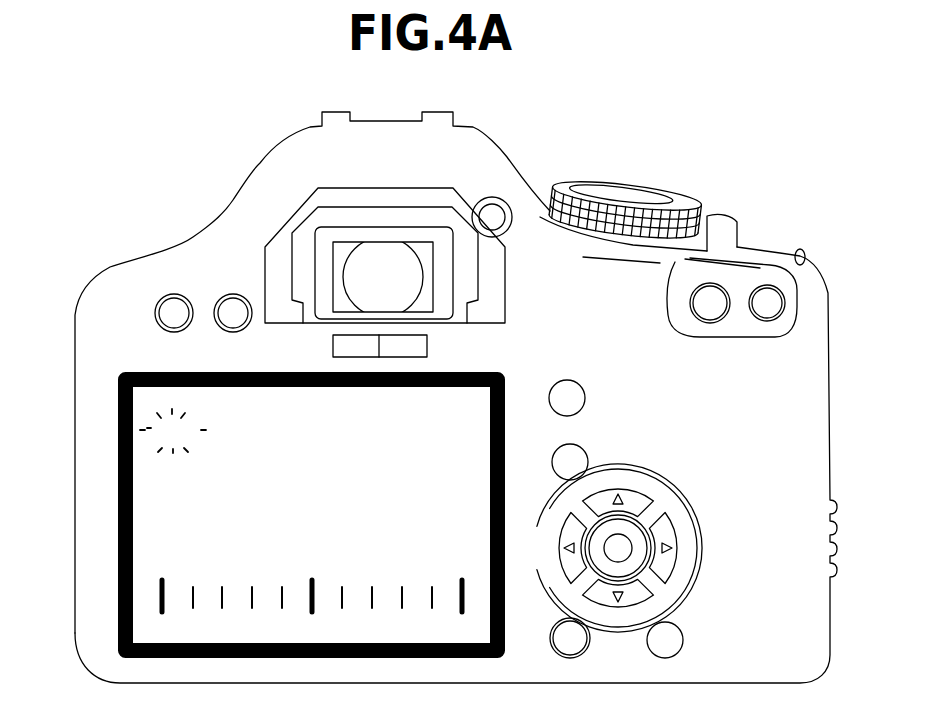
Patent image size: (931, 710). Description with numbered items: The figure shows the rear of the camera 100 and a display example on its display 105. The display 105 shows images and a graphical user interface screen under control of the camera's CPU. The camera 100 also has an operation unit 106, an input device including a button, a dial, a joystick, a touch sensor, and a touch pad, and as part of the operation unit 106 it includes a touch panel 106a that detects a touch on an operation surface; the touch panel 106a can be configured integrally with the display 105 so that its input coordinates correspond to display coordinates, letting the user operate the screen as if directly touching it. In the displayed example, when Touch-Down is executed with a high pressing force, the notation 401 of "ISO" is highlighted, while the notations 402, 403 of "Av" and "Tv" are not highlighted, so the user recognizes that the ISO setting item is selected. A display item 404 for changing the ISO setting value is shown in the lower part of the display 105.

The camera 100 is at (678, 142).
The display 105 is at (278, 427).
The operation unit 106 is at (312, 515).
The touch panel 106a is at (312, 515).
The notation of ISO 401 is at (148, 436).
The notation of Av 402 is at (152, 477).
The notation of Tv 403 is at (152, 527).
The display item for changing the setting value of ISO 404 is at (152, 598).